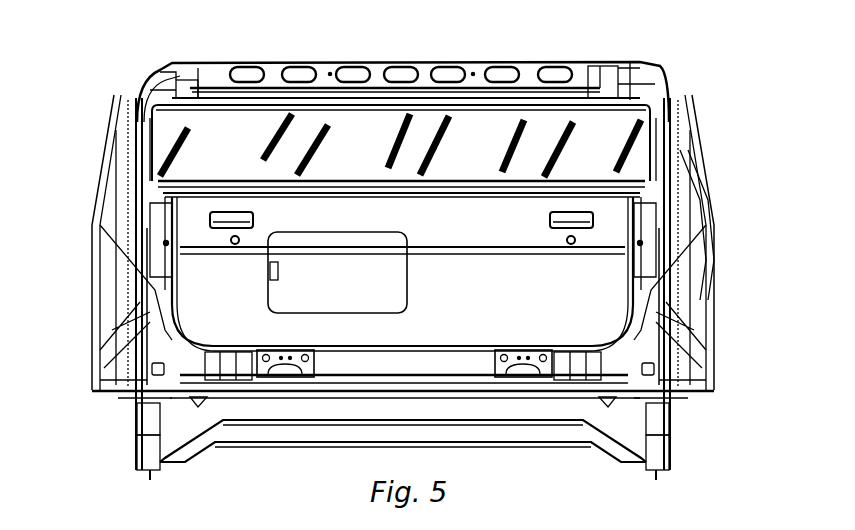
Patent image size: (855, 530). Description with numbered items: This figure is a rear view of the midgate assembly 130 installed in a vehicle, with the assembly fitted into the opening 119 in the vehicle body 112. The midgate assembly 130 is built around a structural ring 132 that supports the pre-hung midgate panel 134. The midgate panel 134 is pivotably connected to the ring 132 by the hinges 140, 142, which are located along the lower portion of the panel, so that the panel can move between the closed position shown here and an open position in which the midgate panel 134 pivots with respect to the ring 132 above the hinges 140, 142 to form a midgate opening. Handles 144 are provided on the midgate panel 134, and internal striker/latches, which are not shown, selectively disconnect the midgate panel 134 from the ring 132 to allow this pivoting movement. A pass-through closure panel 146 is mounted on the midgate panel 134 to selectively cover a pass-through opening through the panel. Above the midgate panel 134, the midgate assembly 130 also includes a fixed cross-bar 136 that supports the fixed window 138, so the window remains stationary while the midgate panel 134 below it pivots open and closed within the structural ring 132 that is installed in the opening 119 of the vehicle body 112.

The vehicle body 112 is at (481, 38).
The opening 119 is at (668, 193).
The midgate assembly 130 is at (117, 413).
The structural ring 132 is at (197, 187).
The midgate panel 134 is at (473, 235).
The fixed cross-bar 136 is at (497, 186).
The fixed window 138 is at (486, 156).
The hinge 140 is at (282, 380).
The hinge 142 is at (501, 376).
The handles 144 is at (254, 221).
The pass-through closure panel 146 is at (355, 286).